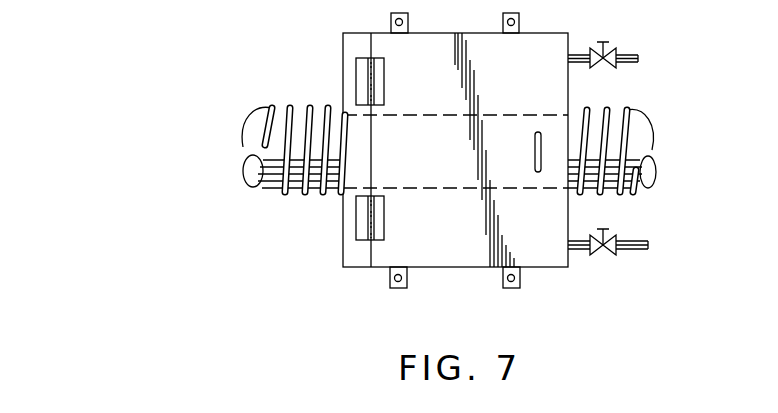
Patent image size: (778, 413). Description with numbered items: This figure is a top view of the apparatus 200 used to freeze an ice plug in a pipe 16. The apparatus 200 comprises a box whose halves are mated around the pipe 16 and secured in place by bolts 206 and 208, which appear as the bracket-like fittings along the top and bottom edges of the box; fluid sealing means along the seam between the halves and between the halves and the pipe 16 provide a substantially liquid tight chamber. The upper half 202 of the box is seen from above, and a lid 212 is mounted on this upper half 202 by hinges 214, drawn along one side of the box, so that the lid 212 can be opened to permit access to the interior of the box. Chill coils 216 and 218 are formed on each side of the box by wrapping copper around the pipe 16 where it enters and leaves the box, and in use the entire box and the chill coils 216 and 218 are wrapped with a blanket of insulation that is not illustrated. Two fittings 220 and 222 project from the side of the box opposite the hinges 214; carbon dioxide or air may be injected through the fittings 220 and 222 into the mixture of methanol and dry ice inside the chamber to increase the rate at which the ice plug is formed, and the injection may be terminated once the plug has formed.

The pipe 16 is at (258, 112).
The apparatus 200 is at (332, 268).
The upper half 202 is at (568, 262).
The bolts 206 is at (509, 288).
The bolts 208 is at (510, 17).
The lid 212 is at (540, 255).
The hinges 214 is at (362, 78).
The chill coil 216 is at (290, 193).
The chill coil 218 is at (626, 112).
The fitting 220 is at (622, 52).
The fitting 222 is at (628, 242).